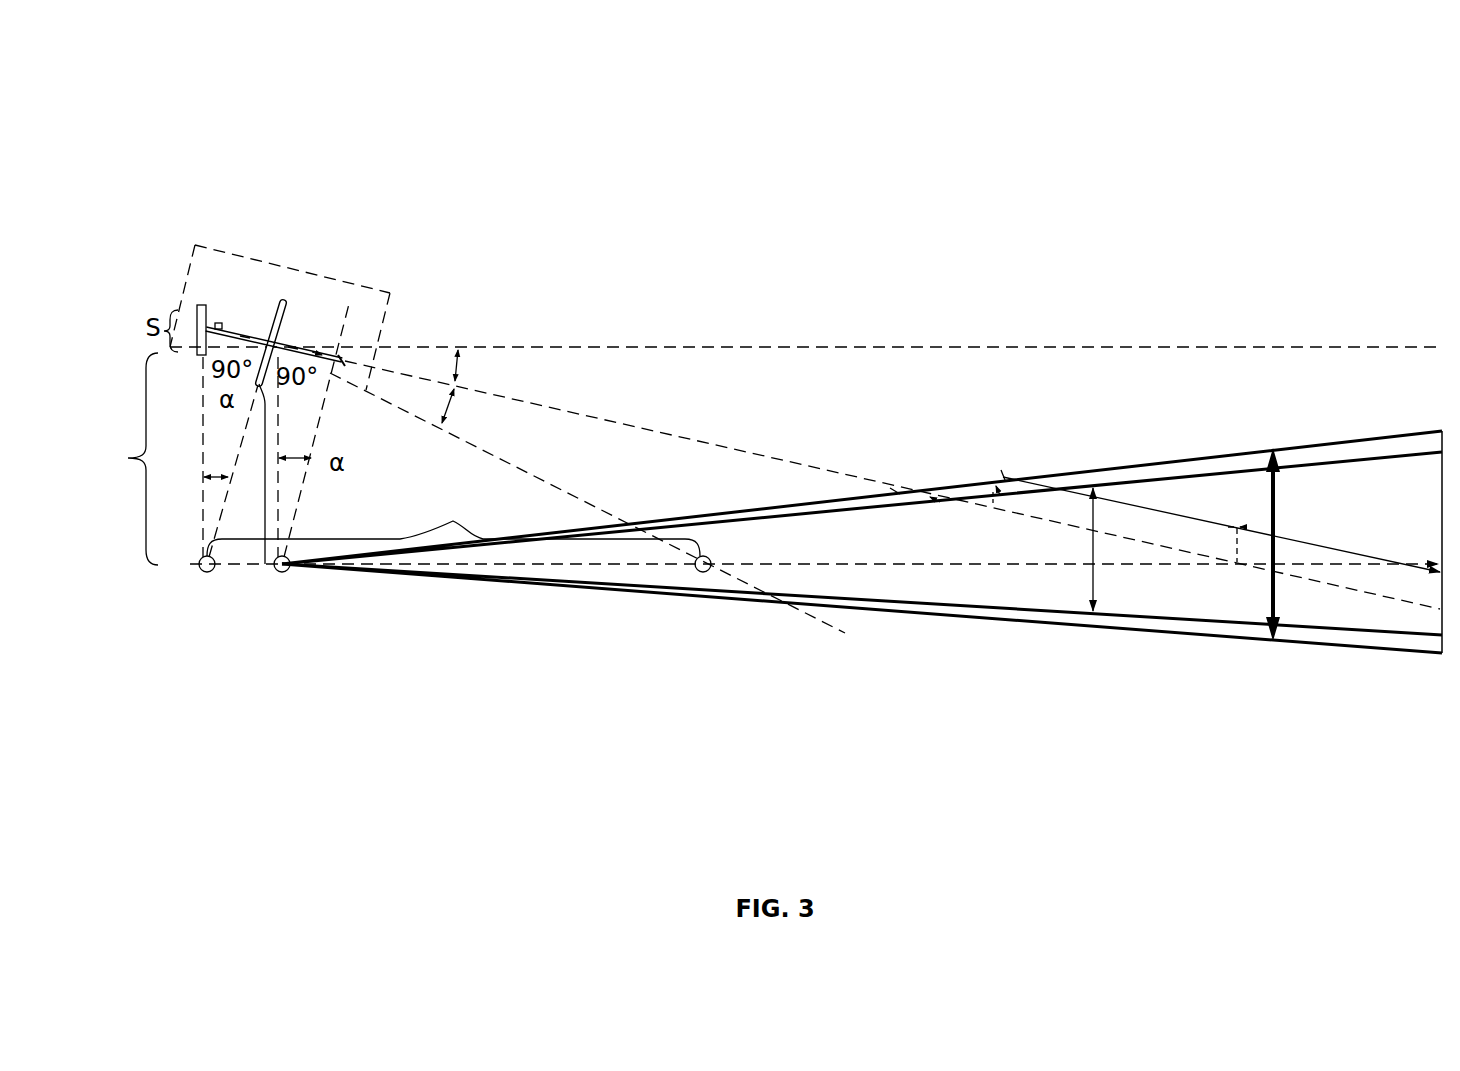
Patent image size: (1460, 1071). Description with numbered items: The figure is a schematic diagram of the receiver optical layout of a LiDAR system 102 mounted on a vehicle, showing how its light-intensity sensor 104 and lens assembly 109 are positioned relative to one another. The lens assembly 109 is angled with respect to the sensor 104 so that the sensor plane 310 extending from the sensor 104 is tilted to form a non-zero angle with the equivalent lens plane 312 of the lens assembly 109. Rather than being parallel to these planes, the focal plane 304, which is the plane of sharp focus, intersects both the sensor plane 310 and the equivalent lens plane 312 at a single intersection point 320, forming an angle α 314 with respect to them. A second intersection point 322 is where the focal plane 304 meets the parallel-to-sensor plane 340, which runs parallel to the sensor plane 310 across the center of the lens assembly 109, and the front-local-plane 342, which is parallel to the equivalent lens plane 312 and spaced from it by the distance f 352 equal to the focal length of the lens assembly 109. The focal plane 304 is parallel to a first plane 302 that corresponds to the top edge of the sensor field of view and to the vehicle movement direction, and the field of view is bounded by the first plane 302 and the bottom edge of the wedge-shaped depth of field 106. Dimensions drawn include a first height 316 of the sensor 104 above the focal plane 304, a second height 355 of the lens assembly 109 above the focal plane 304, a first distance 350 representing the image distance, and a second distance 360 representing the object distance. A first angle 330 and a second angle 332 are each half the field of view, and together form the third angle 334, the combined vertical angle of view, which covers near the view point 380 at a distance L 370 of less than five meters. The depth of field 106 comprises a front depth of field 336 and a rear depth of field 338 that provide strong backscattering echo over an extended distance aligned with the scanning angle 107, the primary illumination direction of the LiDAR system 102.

The LiDAR system 102 is at (150, 150).
The light-intensity sensor 104 is at (206, 306).
The lens assembly 109 is at (283, 299).
The depth of field 106 is at (717, 497).
The scanning angle 107 is at (1167, 606).
The first plane 302 is at (1370, 347).
The focal plane 304 is at (868, 566).
The sensor plane 310 is at (200, 378).
The equivalent lens plane 312 is at (207, 555).
The angle α 314 is at (218, 474).
The first height H1 316 is at (117, 459).
The intersection point 320 is at (207, 573).
The intersection point 322 is at (286, 573).
The first angle θ/2 330 is at (458, 368).
The second angle θ/2 332 is at (447, 408).
The third angle θ 334 is at (462, 353).
The front depth of field 336 is at (1147, 503).
The rear depth of field 338 is at (1276, 527).
The parallel-to-sensor plane 340 is at (325, 372).
The front-local-plane 342 is at (330, 398).
The first distance Di 350 is at (242, 325).
The distance f 352 is at (306, 338).
The second height H2 355 is at (268, 478).
The second distance Do 360 is at (722, 350).
The distance L 370 is at (1150, 660).
The view point 380 is at (701, 573).